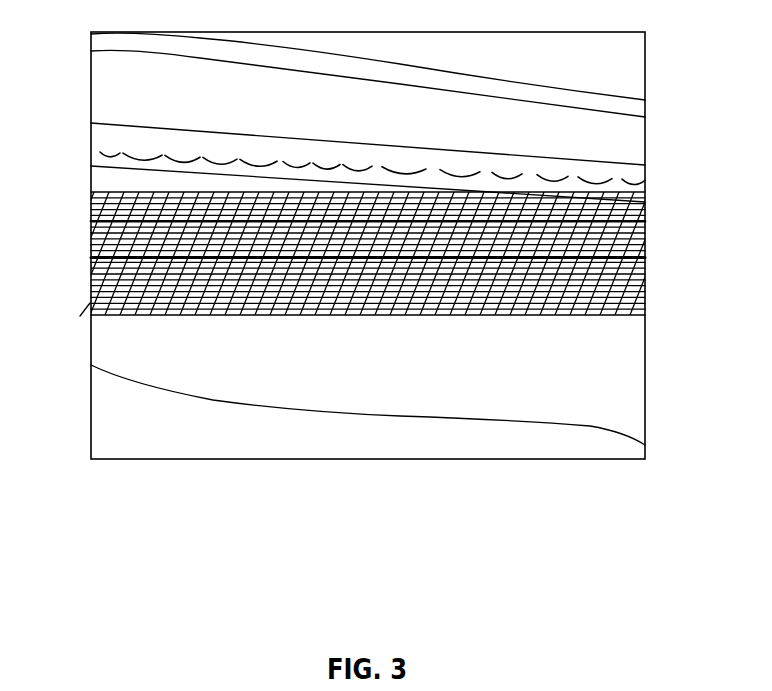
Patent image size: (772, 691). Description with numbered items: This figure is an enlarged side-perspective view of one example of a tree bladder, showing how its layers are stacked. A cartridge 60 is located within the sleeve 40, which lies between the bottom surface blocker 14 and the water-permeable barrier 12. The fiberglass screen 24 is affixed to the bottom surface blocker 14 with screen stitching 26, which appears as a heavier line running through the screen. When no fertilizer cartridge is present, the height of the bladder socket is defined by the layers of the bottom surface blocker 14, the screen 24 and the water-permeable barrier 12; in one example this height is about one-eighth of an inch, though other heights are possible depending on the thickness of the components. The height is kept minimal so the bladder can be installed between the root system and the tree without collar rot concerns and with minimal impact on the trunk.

The water-permeable barrier 12 is at (618, 107).
The bottom surface blocker 14 is at (570, 391).
The fiberglass screen 24 is at (590, 297).
The screen stitching 26 is at (95, 262).
The sleeve 40 is at (553, 210).
The cartridge 60 is at (110, 142).